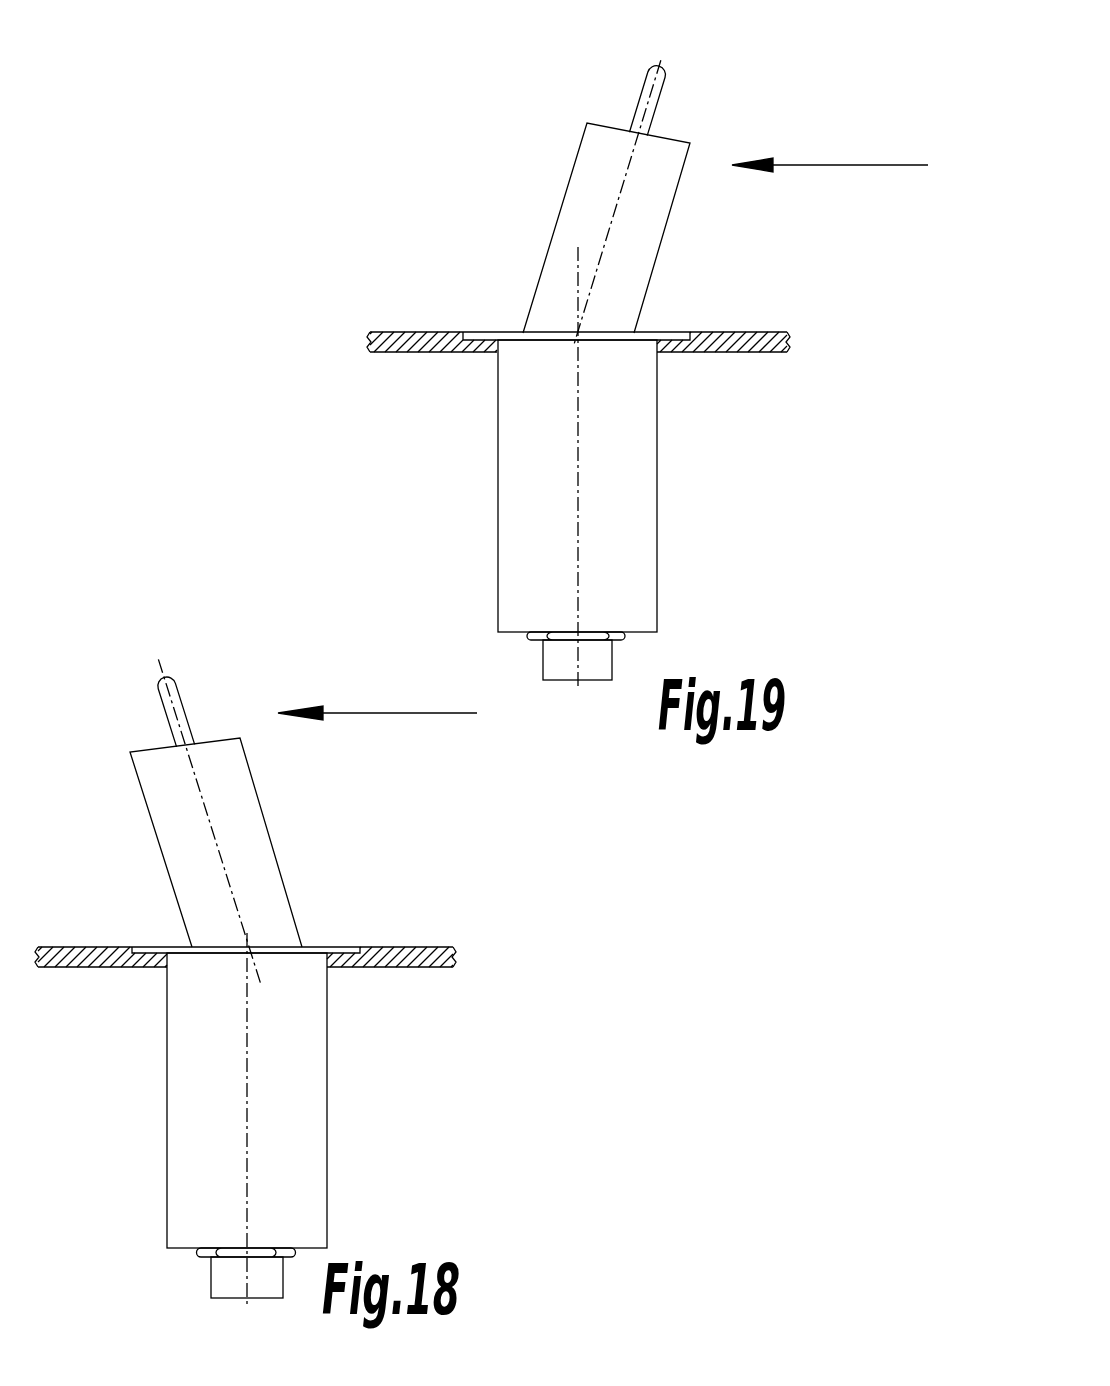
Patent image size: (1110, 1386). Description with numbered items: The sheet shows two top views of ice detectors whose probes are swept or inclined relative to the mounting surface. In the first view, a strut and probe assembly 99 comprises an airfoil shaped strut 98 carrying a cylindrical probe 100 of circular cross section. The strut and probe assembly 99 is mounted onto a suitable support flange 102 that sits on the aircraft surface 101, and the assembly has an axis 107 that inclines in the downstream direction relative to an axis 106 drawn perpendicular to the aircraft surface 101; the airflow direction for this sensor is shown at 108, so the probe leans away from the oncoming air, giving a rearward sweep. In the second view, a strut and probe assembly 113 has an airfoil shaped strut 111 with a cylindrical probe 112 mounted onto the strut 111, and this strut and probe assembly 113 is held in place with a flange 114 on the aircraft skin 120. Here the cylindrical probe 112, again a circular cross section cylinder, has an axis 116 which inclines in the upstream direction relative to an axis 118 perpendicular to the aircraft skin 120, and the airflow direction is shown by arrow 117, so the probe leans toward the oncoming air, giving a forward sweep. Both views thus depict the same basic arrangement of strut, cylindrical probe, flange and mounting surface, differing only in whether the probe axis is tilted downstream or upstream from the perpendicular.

In FIG. 18, the airfoil shaped strut 98 is at (250, 847).
In FIG. 18, the strut and probe assembly 99 is at (277, 773).
In FIG. 18, the cylindrical probe 100 is at (180, 692).
In FIG. 18, the aircraft surface 101 is at (413, 946).
In FIG. 18, the support flange 102 is at (338, 947).
In FIG. 18, the axis perpendicular to the aircraft surface 106 is at (250, 1037).
In FIG. 18, the axis of the strut and probe assembly 107 is at (158, 670).
In FIG. 18, the airflow direction 108 is at (368, 708).
In FIG. 19, the airfoil shaped strut 111 is at (562, 285).
In FIG. 19, the cylindrical probe 112 is at (645, 82).
In FIG. 19, the strut and probe assembly 113 is at (552, 202).
In FIG. 19, the flange 114 is at (647, 330).
In FIG. 19, the axis of the cylindrical probe 116 is at (660, 60).
In FIG. 19, the airflow direction arrow 117 is at (823, 167).
In FIG. 19, the axis perpendicular to the aircraft skin 118 is at (577, 433).
In FIG. 19, the aircraft skin 120 is at (408, 330).